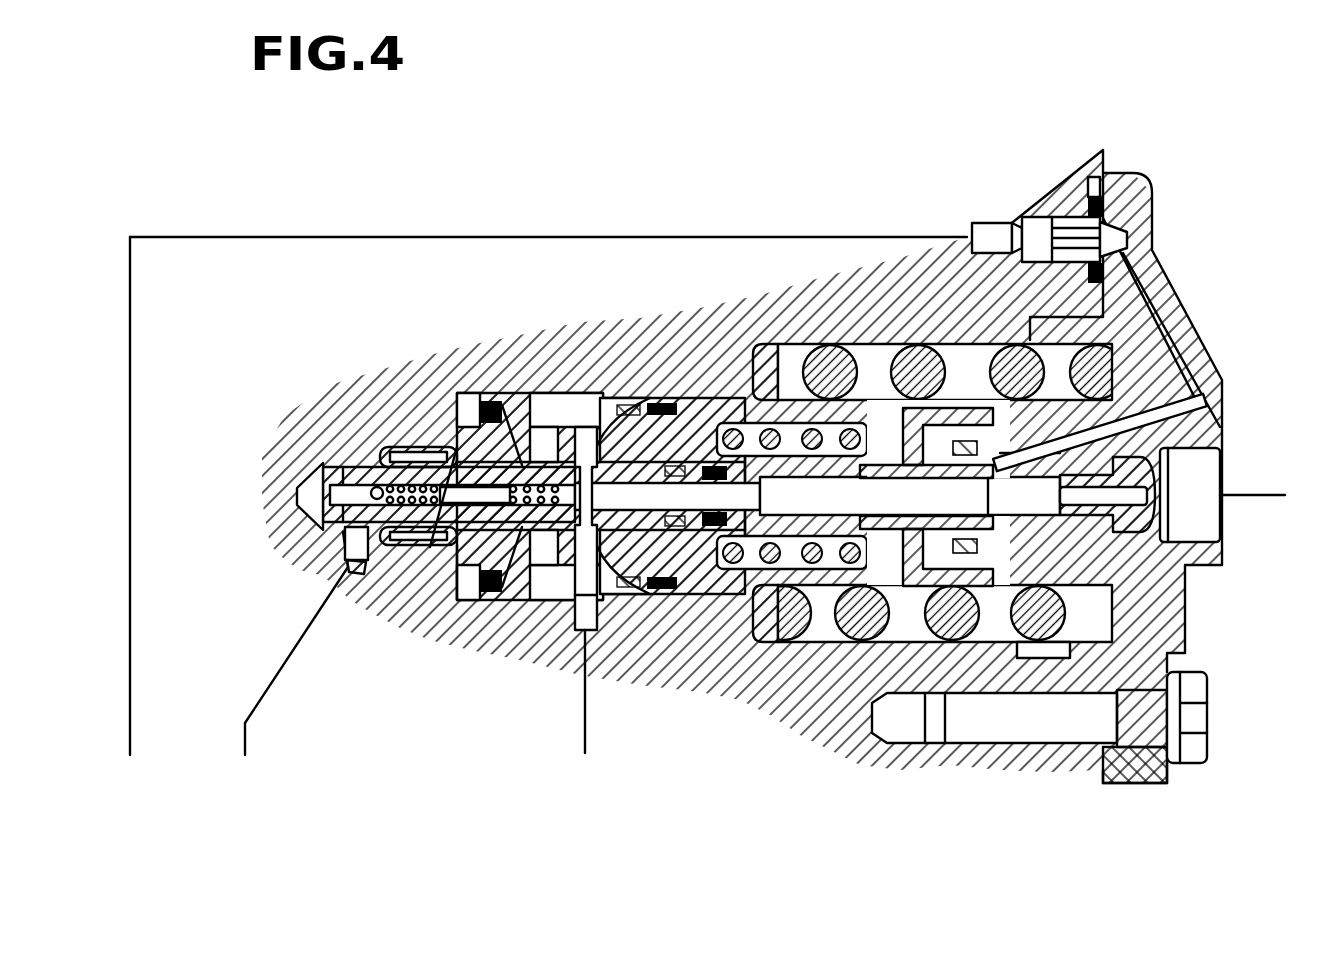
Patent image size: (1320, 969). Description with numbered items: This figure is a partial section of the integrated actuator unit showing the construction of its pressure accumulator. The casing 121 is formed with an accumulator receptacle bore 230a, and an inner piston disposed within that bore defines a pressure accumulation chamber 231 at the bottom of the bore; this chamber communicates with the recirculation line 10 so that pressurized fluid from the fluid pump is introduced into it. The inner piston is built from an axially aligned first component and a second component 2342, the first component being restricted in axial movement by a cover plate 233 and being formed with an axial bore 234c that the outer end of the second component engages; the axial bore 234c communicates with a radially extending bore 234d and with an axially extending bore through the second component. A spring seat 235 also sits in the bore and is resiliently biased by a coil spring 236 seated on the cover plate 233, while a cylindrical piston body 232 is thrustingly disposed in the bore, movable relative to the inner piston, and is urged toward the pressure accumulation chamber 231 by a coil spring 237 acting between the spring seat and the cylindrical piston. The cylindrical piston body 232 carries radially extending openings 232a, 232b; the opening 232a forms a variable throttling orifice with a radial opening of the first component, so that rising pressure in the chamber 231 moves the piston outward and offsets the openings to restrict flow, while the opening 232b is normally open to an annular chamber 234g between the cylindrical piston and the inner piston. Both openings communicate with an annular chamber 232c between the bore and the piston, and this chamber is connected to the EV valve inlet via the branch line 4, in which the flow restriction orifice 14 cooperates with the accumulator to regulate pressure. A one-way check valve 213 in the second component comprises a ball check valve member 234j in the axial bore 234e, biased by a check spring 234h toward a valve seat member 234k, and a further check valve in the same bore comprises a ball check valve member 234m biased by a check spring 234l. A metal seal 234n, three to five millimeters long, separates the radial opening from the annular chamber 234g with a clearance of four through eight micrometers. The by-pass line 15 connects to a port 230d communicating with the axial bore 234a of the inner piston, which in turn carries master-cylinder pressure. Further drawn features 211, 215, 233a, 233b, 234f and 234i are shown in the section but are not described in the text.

The branch line 4 is at (587, 745).
The recirculation line 10 is at (257, 713).
The flow restriction orifice 14 is at (630, 590).
The by-pass line 15 is at (130, 715).
The casing 121 is at (1067, 763).
The housing lug 211 is at (308, 588).
The one-way check valve 213 is at (373, 473).
The valve body lower portion 215 is at (468, 597).
The accumulator receptacle bore 230a is at (993, 640).
The port 230d is at (994, 235).
The pressure accumulation chamber 231 is at (298, 488).
The cylindrical piston body 232 is at (612, 430).
The radially extending opening 232a is at (602, 420).
The radially extending opening 232b is at (517, 450).
The annular chamber 232c is at (600, 593).
The cover plate 233 is at (1173, 600).
The flange plate 233a is at (1170, 347).
The pin 233b is at (1162, 488).
The axial bore 234a is at (883, 470).
The axial bore 234c is at (550, 585).
The radially extending bore 234d is at (533, 398).
The axial bore 234e is at (443, 480).
The needle bearing 234f is at (647, 430).
The annular chamber 234g is at (478, 440).
The check spring 234h is at (420, 488).
The lower bearing seat 234i is at (882, 668).
The ball check valve member 234j is at (375, 455).
The valve seat member 234k is at (298, 522).
The check spring 234l is at (445, 578).
The ball check valve member 234m is at (690, 440).
The metal seal 234n is at (558, 420).
The second component 2342 is at (335, 478).
The spring seat 235 is at (766, 345).
The coil spring 236 is at (921, 372).
The coil spring 237 is at (745, 588).